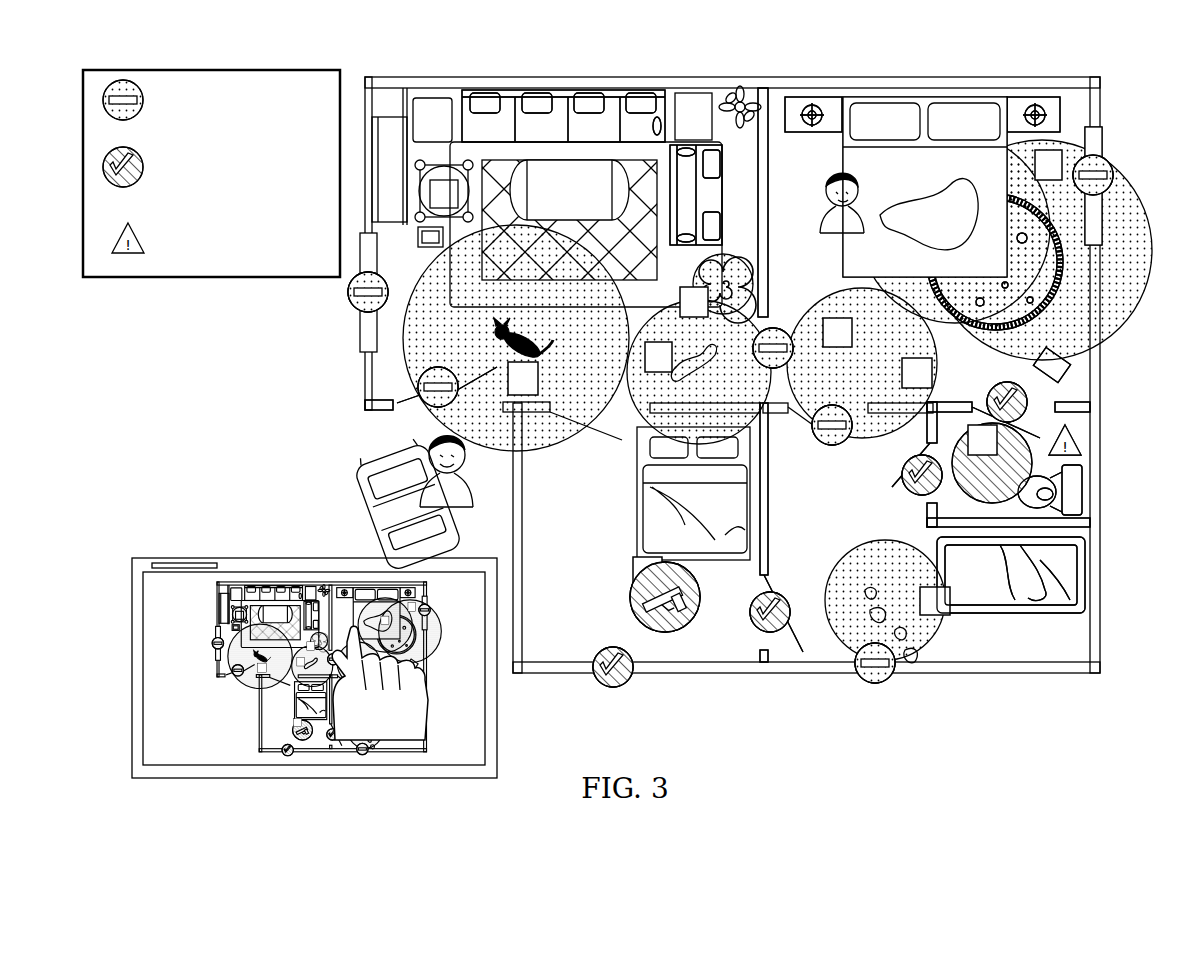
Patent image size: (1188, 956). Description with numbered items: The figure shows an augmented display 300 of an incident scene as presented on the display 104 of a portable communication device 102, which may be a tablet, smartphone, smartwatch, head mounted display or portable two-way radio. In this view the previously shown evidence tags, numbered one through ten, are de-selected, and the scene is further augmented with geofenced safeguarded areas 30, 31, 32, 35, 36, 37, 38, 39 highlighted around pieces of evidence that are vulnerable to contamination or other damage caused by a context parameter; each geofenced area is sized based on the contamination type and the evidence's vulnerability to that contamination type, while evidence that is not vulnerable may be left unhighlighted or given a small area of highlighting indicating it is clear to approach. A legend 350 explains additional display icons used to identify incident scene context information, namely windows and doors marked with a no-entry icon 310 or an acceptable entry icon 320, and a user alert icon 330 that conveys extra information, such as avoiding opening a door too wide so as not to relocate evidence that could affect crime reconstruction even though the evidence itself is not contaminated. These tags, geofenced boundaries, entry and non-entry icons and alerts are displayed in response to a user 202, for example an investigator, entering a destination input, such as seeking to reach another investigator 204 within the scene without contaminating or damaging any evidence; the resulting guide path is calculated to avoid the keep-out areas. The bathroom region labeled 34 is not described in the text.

The geofenced safeguarded area 30 is at (953, 622).
The geofenced safeguarded area 31 is at (957, 133).
The geofenced safeguarded area 32 is at (1107, 338).
The bathroom 34 is at (988, 505).
The geofenced safeguarded area 35 is at (727, 257).
The geofenced safeguarded area 36 is at (673, 290).
The geofenced safeguarded area 37 is at (410, 357).
The geofenced safeguarded area 38 is at (817, 318).
The geofenced safeguarded area 39 is at (636, 610).
The portable communication device 102 is at (286, 668).
The display 104 is at (143, 713).
The user 202 is at (462, 479).
The investigator 204 is at (832, 176).
The augmented display 300 is at (1128, 92).
The no-entry icon 310 is at (1108, 166).
The acceptable entry icon 320 is at (1055, 408).
The user alert icon 330 is at (1083, 441).
The legend 350 is at (83, 171).